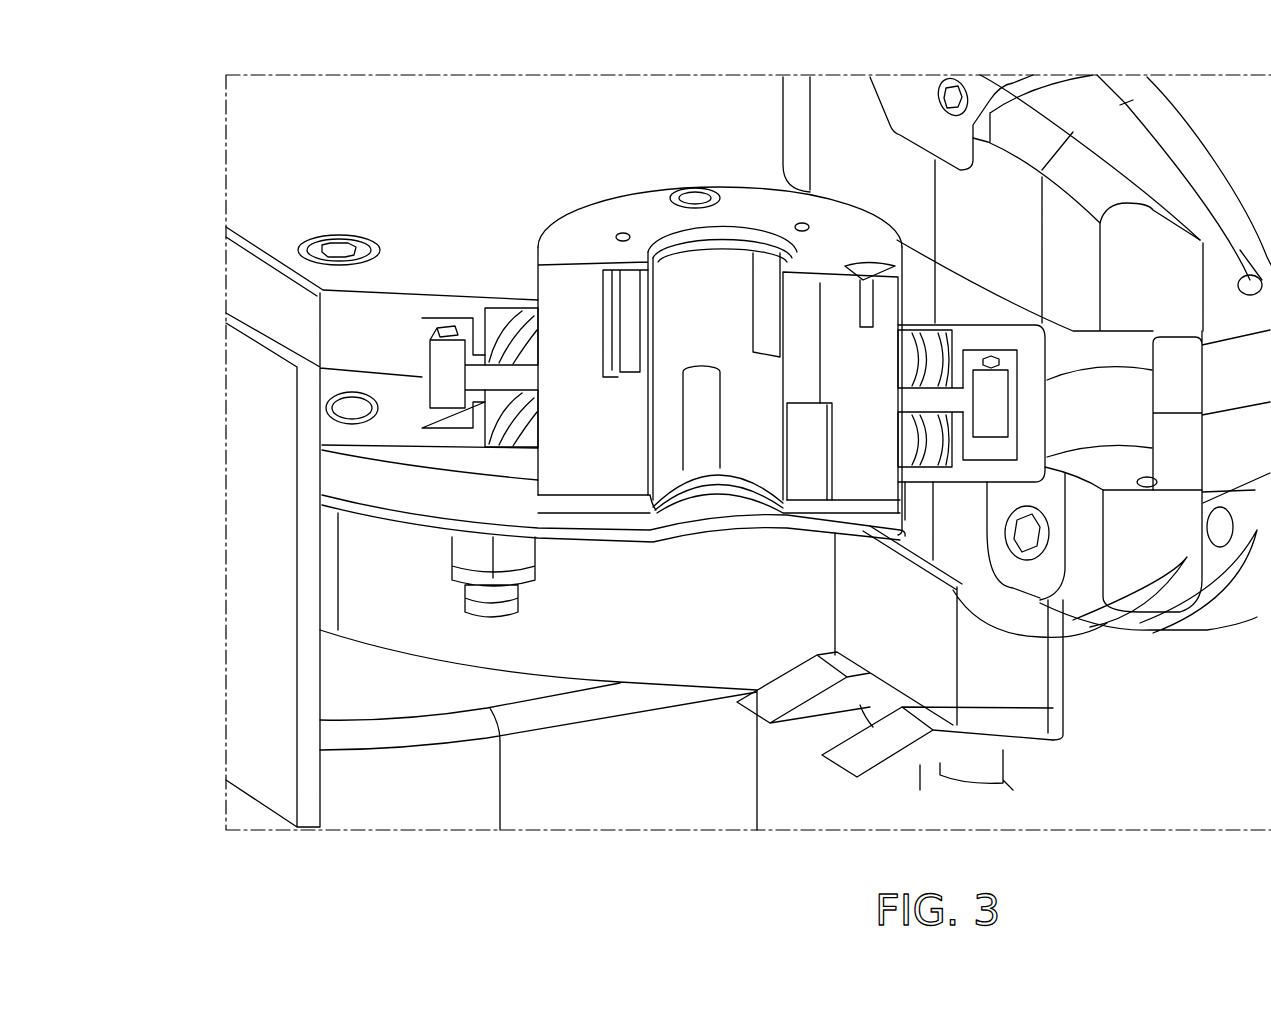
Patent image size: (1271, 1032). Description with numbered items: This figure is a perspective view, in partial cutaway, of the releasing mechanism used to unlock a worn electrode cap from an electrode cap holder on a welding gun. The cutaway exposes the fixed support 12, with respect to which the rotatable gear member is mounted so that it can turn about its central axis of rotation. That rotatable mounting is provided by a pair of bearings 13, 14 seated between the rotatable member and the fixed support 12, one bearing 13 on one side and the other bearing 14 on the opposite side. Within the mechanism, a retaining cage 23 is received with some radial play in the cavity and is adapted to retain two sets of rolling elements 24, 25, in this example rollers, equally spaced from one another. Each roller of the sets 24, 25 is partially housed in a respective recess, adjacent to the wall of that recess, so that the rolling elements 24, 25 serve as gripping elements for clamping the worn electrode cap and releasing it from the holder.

The fixed support 12 is at (436, 305).
The bearing 13 is at (507, 318).
The bearing 14 is at (455, 436).
The retaining cage 23 is at (678, 282).
The rolling elements 24 is at (765, 302).
The rolling elements 25 is at (700, 457).